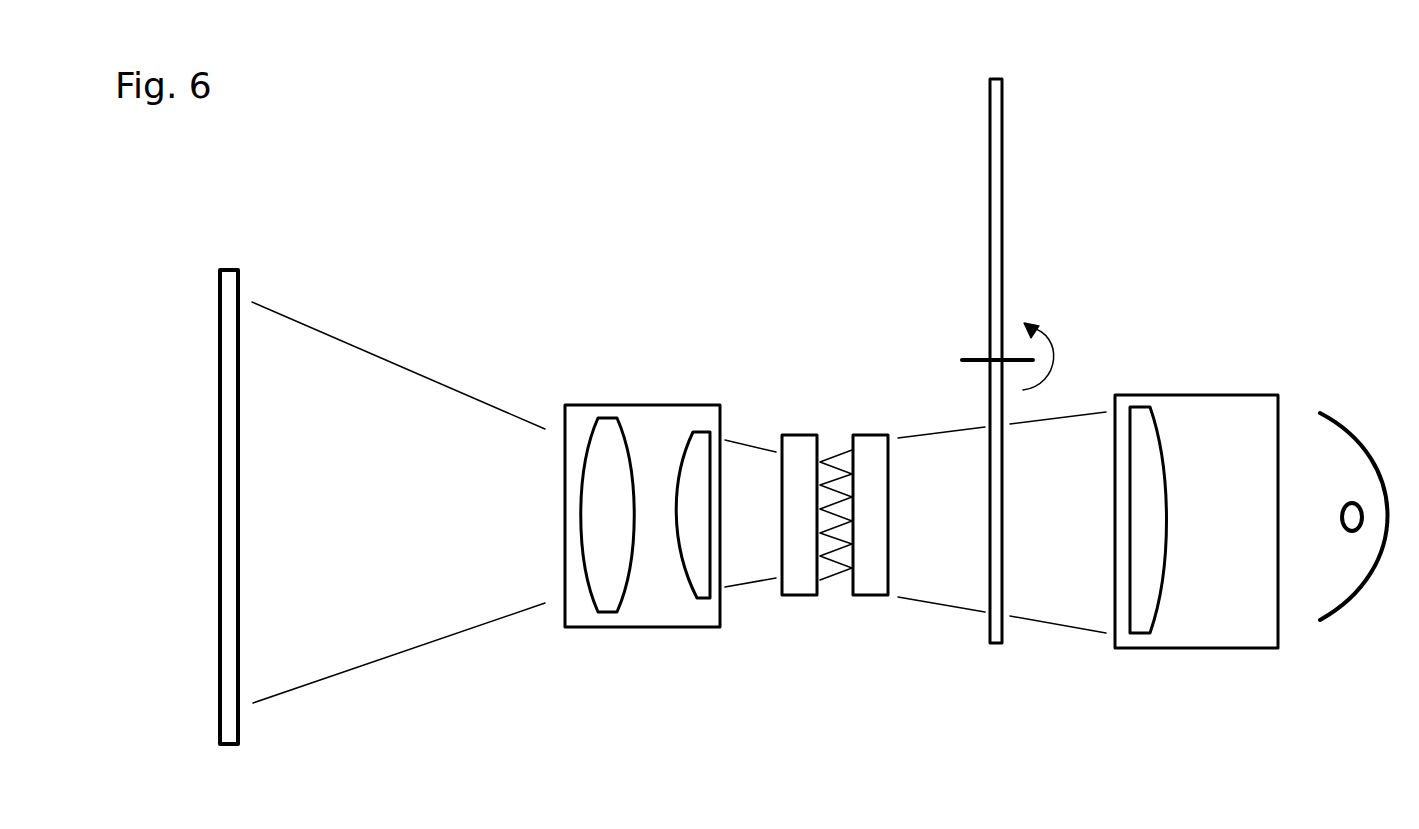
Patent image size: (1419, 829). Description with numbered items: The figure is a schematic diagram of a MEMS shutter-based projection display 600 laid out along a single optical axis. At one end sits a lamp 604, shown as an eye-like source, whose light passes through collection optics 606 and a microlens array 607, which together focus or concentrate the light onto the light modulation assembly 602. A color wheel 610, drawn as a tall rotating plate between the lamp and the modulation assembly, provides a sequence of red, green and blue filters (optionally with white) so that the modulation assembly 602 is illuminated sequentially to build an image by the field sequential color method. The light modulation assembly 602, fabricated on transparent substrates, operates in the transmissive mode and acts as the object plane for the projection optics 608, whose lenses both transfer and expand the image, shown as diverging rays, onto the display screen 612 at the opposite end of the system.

The MEMS shutter-based projection display 600 is at (498, 168).
The light modulation assembly 602 is at (799, 434).
The lamp 604 is at (1398, 689).
The collection optics 606 is at (1216, 394).
The microlens array 607 is at (870, 434).
The projection optics 608 is at (643, 403).
The color wheel 610 is at (1002, 258).
The display screen 612 is at (218, 407).